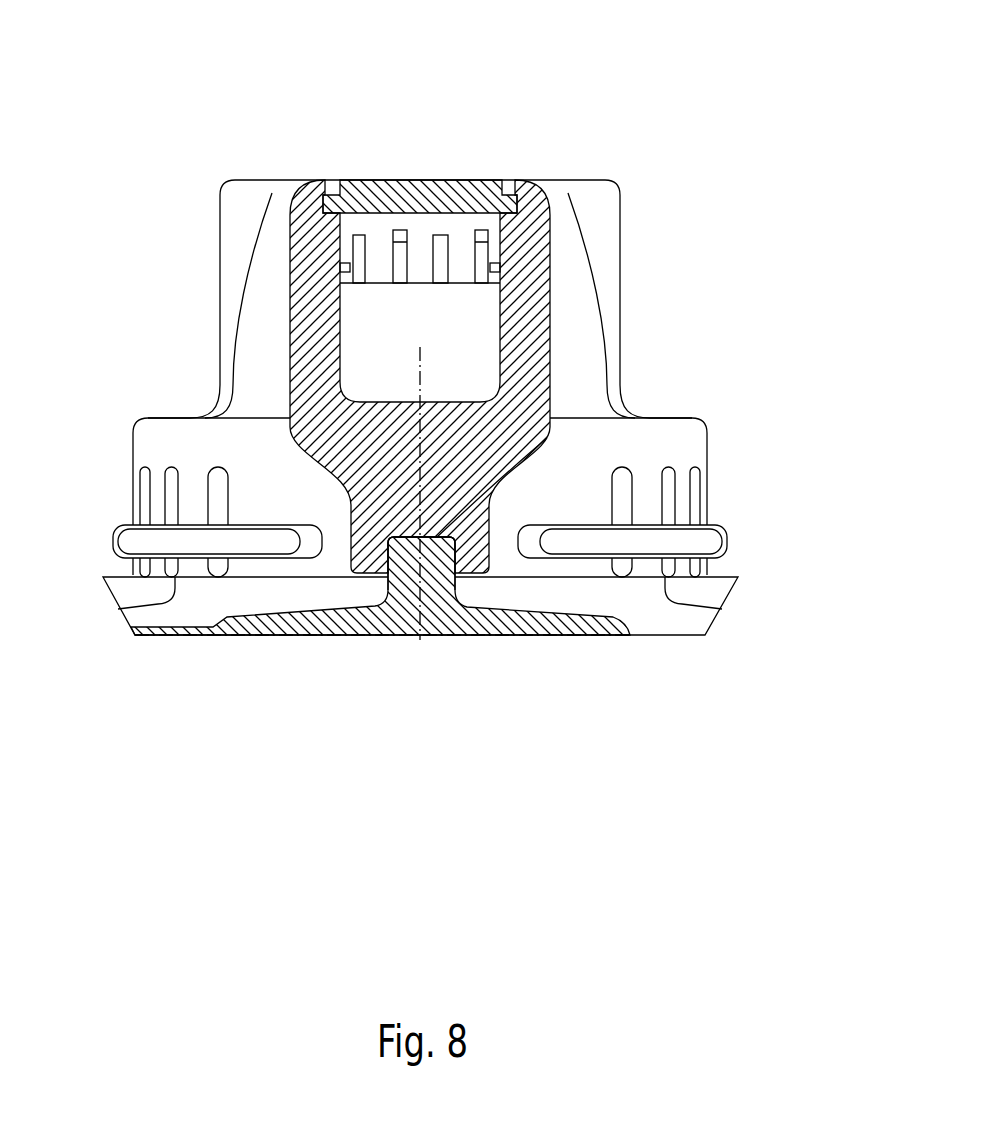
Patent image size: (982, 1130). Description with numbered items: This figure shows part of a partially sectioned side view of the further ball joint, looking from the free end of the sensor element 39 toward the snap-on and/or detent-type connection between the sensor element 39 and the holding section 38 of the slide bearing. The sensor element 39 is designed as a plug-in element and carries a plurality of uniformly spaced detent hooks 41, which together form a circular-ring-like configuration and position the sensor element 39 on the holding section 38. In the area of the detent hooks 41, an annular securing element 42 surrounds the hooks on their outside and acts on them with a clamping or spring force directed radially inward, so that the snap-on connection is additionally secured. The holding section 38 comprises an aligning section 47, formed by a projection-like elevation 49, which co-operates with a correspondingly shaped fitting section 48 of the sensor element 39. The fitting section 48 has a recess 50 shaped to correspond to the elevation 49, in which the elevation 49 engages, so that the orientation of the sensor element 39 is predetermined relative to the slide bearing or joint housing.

The sensor element 39 is at (645, 112).
The fitting section 48 is at (355, 519).
The recess 50 is at (548, 440).
The detent hooks 41 is at (683, 498).
The securing element 42 is at (720, 543).
The holding section 38 is at (246, 636).
The aligning section 47 is at (398, 627).
The elevation 49 is at (441, 595).